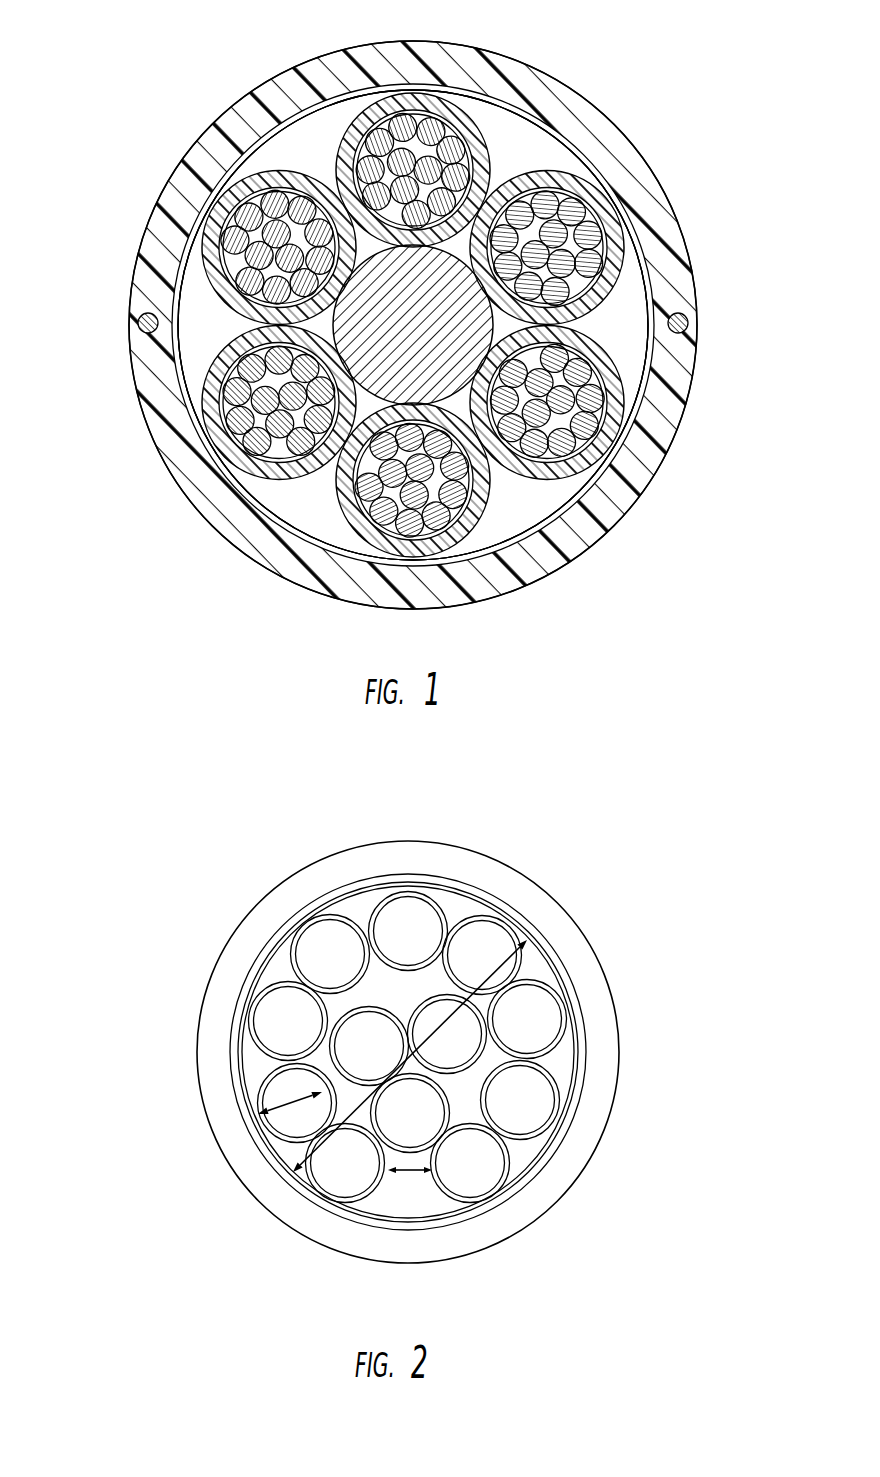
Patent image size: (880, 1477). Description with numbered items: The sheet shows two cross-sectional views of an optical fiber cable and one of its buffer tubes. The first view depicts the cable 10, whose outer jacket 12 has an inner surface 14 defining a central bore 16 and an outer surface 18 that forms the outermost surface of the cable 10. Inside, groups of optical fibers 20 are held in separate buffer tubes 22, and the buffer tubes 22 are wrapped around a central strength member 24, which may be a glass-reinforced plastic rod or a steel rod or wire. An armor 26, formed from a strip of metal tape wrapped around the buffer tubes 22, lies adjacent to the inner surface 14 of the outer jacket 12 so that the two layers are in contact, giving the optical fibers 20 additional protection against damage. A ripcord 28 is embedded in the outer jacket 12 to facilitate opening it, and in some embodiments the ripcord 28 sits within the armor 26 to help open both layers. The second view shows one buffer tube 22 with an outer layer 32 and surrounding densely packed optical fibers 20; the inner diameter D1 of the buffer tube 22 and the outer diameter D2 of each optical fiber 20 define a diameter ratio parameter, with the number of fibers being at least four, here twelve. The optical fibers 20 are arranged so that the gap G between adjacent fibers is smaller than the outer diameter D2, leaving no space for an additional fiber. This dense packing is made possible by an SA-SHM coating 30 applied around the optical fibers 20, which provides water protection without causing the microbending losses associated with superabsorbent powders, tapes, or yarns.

In FIG. 1, the cable 10 is at (669, 80).
In FIG. 1, the outer jacket 12 is at (637, 197).
In FIG. 1, the inner surface 14 is at (616, 475).
In FIG. 1, the central bore 16 is at (619, 341).
In FIG. 1, the outer surface 18 is at (710, 360).
In FIG. 1, the optical fibers 20 is at (240, 413).
In FIG. 2, the optical fibers 20 is at (505, 960).
In FIG. 1, the buffer tubes 22 is at (460, 370).
In FIG. 2, the buffer tubes 22 is at (614, 908).
In FIG. 1, the central strength member 24 is at (445, 290).
In FIG. 1, the armor 26 is at (533, 530).
In FIG. 1, the ripcord 28 is at (137, 323).
In FIG. 1, the SA-SHM coating 30 is at (635, 400).
In FIG. 2, the SA-SHM coating 30 is at (463, 890).
In FIG. 2, the sub-cable outer jacket 32 is at (577, 1153).
In FIG. 2, the inner diameter D1 is at (447, 937).
In FIG. 2, the outer diameter D2 is at (288, 1104).
In FIG. 2, the gap G is at (410, 1178).